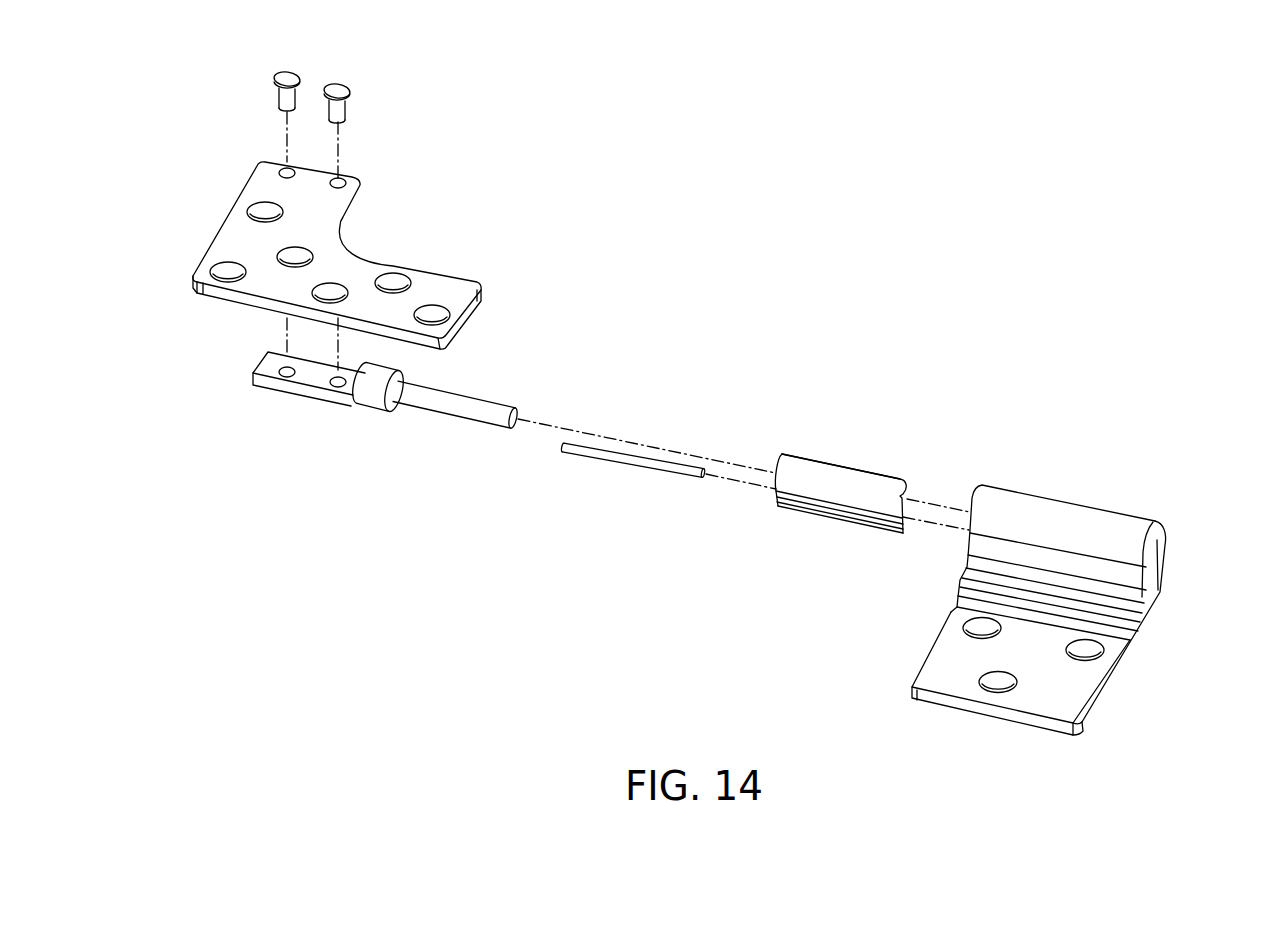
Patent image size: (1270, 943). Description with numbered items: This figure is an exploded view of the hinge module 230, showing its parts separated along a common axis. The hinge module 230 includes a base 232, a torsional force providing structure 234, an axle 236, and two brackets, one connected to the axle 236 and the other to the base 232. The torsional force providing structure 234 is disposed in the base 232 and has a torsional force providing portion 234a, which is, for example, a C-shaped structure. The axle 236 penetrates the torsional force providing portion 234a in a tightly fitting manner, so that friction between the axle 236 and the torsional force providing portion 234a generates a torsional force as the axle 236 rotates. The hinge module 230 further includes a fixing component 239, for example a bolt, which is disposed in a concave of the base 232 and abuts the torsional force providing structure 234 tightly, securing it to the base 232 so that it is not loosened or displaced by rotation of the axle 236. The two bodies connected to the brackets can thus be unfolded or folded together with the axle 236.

The hinge module 230 is at (1241, 755).
The base 232 is at (1067, 515).
The torsional force providing structure 234 is at (841, 466).
The torsional force providing portion 234a is at (842, 473).
The axle 236 is at (449, 407).
The fixing component 239 is at (628, 458).